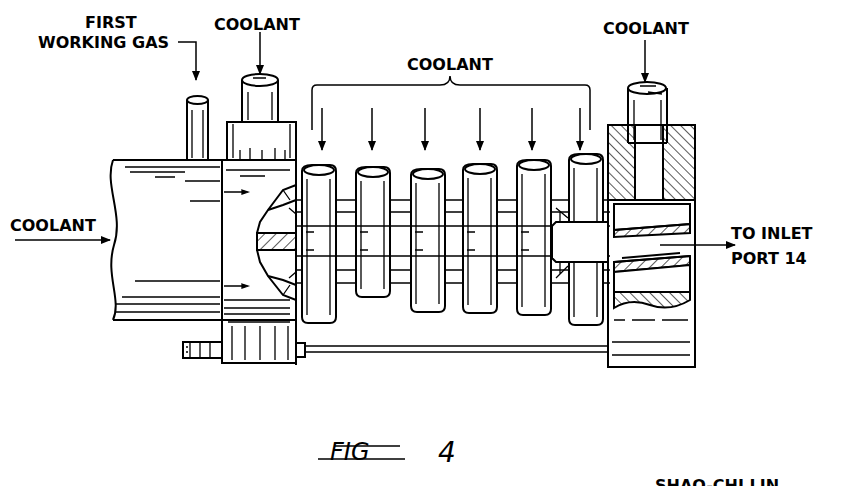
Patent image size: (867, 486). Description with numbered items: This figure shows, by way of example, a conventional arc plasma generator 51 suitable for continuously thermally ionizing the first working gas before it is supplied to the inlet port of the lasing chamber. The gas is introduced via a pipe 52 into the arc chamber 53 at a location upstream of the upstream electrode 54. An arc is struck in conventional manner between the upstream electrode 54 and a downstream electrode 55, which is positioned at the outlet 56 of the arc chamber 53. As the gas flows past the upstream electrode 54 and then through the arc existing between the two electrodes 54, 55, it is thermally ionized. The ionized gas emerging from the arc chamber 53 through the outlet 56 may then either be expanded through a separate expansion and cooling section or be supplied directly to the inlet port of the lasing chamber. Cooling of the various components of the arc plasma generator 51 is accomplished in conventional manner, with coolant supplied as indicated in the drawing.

The arc plasma generator 51 is at (323, 366).
The pipe 52 is at (192, 119).
The arc chamber 53 is at (586, 252).
The upstream electrode 54 is at (276, 242).
The downstream electrode 55 is at (690, 260).
The outlet 56 is at (642, 253).